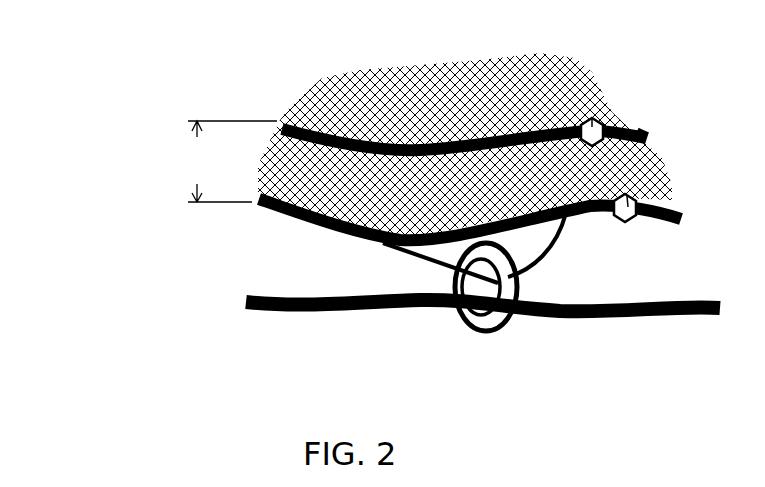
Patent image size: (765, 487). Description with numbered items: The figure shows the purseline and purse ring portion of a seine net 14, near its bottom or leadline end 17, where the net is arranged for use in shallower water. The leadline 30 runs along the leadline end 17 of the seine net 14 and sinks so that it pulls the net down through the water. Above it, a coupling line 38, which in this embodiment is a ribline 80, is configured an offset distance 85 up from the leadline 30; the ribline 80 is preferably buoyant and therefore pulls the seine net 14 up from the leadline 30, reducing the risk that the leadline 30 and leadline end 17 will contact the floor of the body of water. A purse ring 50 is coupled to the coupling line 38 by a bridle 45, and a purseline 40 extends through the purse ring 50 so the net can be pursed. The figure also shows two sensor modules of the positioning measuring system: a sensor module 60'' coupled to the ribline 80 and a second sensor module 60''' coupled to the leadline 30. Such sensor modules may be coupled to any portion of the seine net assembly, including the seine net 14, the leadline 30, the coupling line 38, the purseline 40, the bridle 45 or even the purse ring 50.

The seine net 14 is at (410, 97).
The offset distance 85 is at (232, 161).
The coupling line 38 is at (647, 136).
The leadline 30 is at (288, 217).
The leadline end 17 is at (343, 237).
The bridle 45 is at (566, 237).
The purseline 40 is at (598, 318).
The purse ring 50 is at (488, 330).
The sensor module 60'' is at (625, 85).
The sensor module 60''' is at (680, 191).
The ribline 80 is at (646, 136).